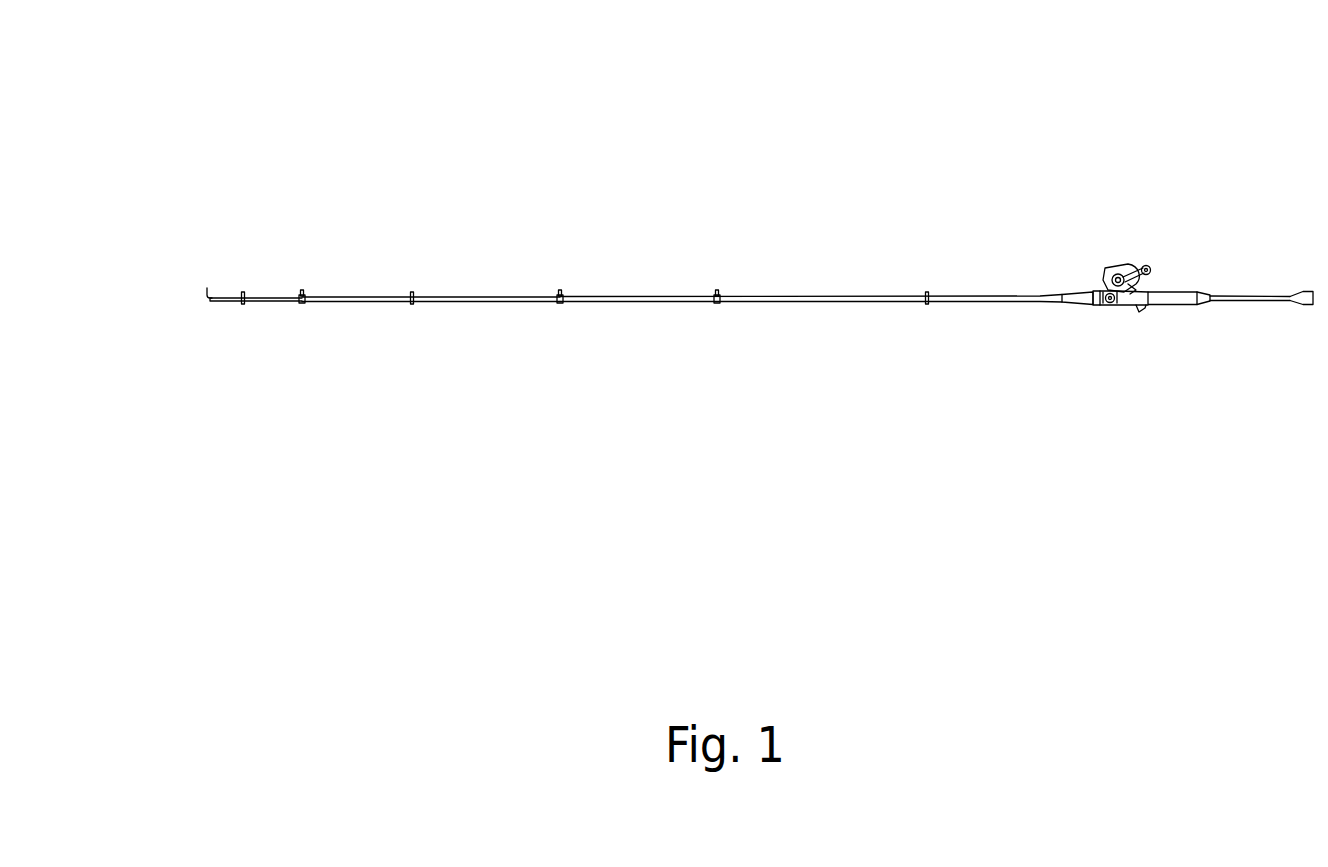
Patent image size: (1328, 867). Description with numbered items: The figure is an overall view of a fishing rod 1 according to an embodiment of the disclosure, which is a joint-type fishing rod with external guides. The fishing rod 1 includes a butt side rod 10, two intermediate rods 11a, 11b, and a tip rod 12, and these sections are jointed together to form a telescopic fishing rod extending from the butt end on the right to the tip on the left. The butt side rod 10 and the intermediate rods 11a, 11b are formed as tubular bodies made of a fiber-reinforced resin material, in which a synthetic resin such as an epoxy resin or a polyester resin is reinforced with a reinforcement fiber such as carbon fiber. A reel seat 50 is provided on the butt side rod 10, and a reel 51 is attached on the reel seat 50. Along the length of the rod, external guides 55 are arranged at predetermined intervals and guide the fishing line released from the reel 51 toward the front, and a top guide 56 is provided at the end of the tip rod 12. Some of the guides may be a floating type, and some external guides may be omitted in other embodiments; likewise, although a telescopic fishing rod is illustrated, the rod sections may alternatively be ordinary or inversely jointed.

The fishing rod 1 is at (812, 150).
The butt side rod 10 is at (1016, 302).
The intermediate rod 11a is at (806, 302).
The intermediate rod 11b is at (526, 302).
The tip rod 12 is at (275, 302).
The reel seat 50 is at (1100, 306).
The reel 51 is at (1108, 268).
The external guides 55 is at (301, 290).
The top guide 56 is at (207, 288).